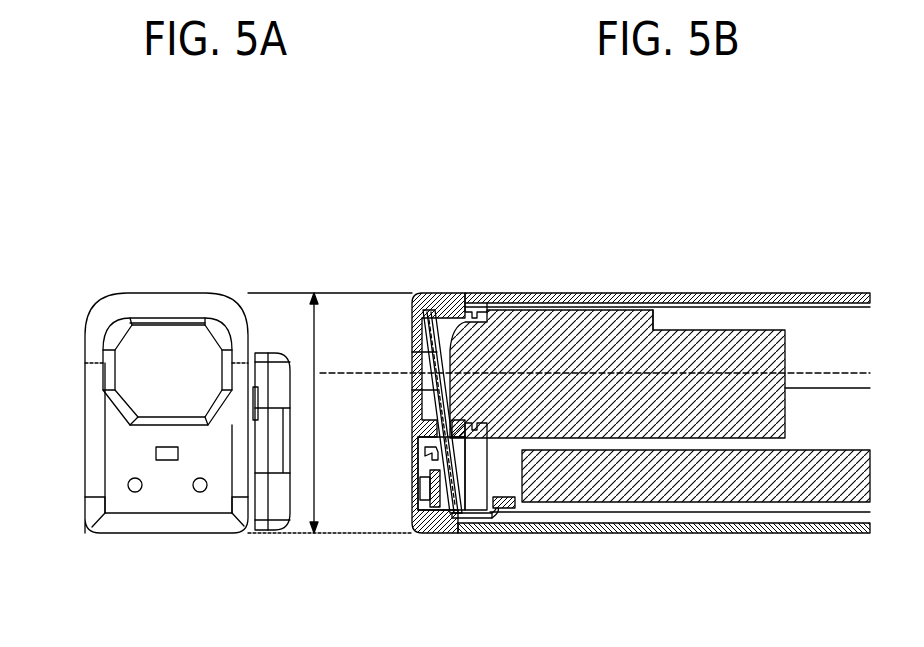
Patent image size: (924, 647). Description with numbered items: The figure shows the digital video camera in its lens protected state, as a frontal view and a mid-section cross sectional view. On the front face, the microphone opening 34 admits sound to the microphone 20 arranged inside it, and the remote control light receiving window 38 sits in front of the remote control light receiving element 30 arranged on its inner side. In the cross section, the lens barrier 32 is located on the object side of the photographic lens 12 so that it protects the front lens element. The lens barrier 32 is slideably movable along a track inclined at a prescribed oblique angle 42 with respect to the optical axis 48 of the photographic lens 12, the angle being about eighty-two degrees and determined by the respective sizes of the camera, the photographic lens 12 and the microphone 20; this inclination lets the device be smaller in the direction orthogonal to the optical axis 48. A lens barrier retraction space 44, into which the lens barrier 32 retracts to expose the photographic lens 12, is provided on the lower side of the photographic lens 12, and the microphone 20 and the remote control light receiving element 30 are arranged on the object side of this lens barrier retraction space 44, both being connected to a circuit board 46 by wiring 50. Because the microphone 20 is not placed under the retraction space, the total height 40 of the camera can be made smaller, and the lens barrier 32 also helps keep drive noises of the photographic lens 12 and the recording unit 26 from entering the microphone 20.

In FIG. 5B, the photographic lens 12 is at (627, 330).
In FIG. 5B, the microphone 20 is at (423, 488).
In FIG. 5B, the recording unit 26 is at (810, 497).
In FIG. 5B, the remote control light receiving element 30 is at (430, 448).
In FIG. 5A, the lens barrier 32 is at (165, 337).
In FIG. 5B, the lens barrier 32 is at (445, 327).
In FIG. 5A, the microphone opening 34 is at (135, 492).
In FIG. 5A, the remote control light receiving window 38 is at (156, 452).
In FIG. 5A, the total height 40 is at (314, 373).
In FIG. 5A, the prescribed oblique angle 42 is at (333, 368).
In FIG. 5B, the lens barrier retraction space 44 is at (455, 468).
In FIG. 5B, the circuit board 46 is at (827, 408).
In FIG. 5B, the optical axis 48 is at (733, 373).
In FIG. 5B, the wiring 50 is at (482, 523).